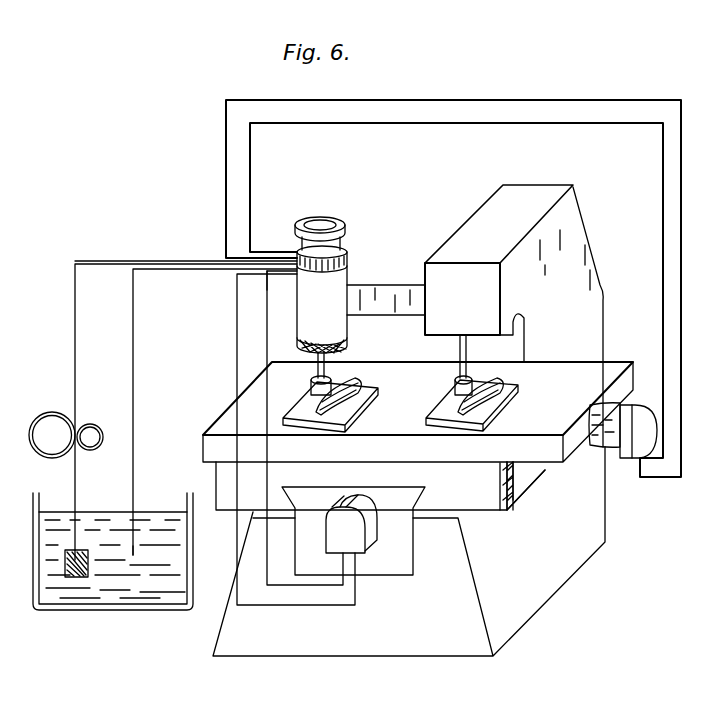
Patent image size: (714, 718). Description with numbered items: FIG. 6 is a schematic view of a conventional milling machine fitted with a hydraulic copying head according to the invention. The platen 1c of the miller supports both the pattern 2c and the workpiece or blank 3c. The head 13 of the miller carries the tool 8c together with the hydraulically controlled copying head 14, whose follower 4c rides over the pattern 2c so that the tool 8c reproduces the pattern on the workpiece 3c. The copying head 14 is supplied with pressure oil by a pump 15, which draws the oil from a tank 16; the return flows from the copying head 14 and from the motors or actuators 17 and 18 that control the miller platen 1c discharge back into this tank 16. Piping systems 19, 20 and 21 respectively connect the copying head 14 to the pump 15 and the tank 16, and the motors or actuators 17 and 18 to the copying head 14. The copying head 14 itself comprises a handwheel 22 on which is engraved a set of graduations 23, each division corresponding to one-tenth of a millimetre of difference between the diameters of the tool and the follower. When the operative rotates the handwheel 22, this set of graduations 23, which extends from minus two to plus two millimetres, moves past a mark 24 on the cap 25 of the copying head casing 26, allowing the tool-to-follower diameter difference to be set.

The platen 1c is at (495, 428).
The pattern 2c is at (345, 378).
The workpiece 3c is at (495, 380).
The follower 4c is at (310, 384).
The tool 8c is at (453, 386).
The head 13 is at (517, 193).
The copying head 14 is at (305, 309).
The pump 15 is at (46, 424).
The tank 16 is at (130, 593).
The motor or actuator 17 is at (347, 533).
The motor or actuator 18 is at (612, 406).
The piping system 19 is at (132, 290).
The piping system 20 is at (313, 605).
The piping system 21 is at (614, 123).
The handwheel 22 is at (341, 225).
The set of graduations 23 is at (350, 244).
The mark 24 is at (266, 280).
The cap 25 is at (300, 250).
The copying head casing 26 is at (338, 268).